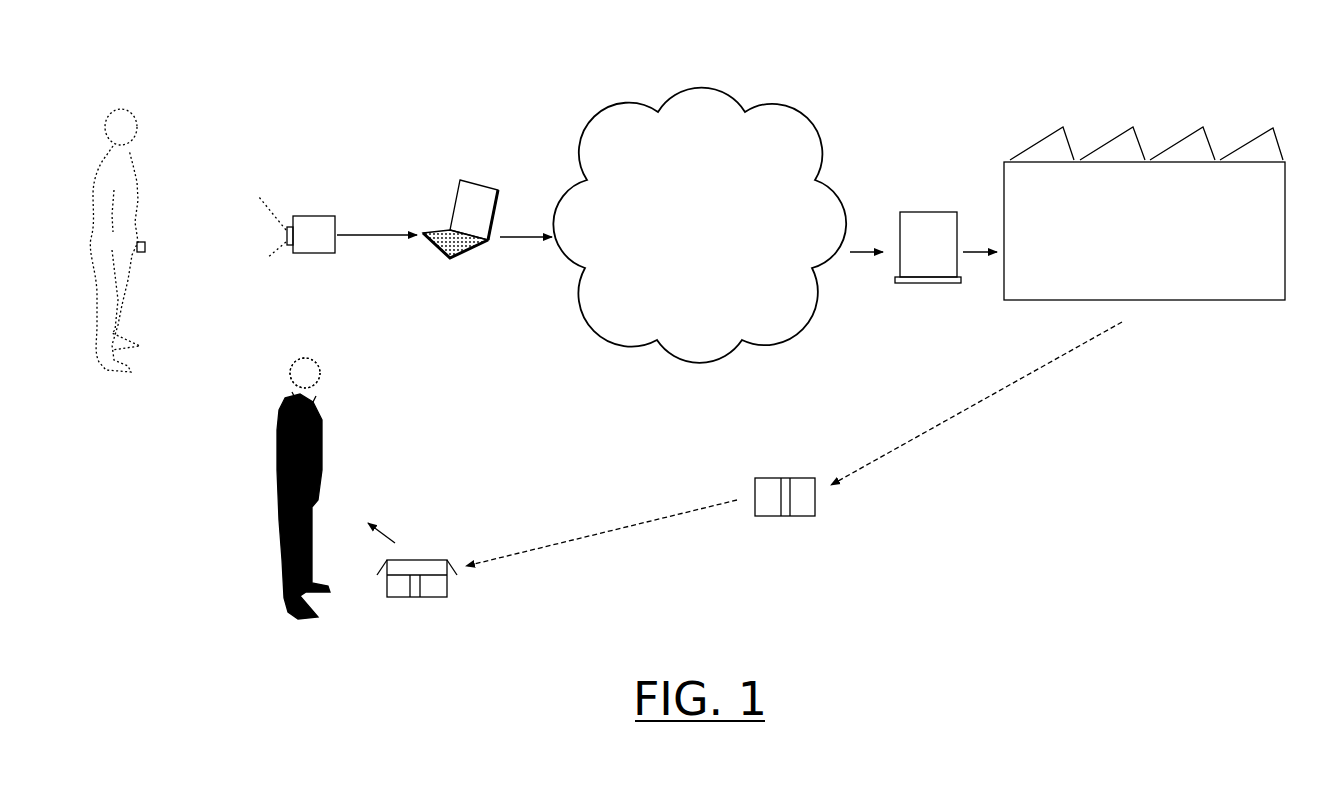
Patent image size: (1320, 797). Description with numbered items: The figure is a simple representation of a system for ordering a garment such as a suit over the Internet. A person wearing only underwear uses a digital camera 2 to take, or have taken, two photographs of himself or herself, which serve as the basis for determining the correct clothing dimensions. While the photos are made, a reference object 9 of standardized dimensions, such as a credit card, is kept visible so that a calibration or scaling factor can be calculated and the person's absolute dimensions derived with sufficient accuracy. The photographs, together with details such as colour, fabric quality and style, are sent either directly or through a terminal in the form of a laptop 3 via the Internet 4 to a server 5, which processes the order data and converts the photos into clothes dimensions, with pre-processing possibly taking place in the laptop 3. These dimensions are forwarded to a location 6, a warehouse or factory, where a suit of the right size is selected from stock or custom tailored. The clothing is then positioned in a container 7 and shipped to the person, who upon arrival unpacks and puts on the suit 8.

The digital camera 2 is at (317, 227).
The laptop 3 is at (477, 203).
The Internet 4 is at (686, 114).
The server 5 is at (919, 232).
The location 6 is at (1030, 192).
The container 7 is at (800, 494).
The suit 8 is at (277, 420).
The reference object 9 is at (147, 246).